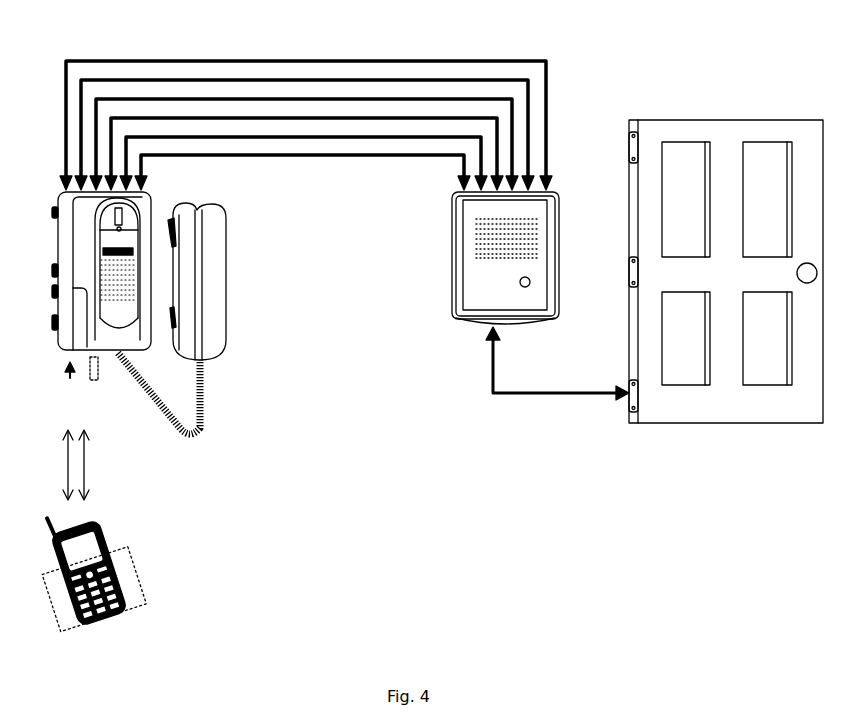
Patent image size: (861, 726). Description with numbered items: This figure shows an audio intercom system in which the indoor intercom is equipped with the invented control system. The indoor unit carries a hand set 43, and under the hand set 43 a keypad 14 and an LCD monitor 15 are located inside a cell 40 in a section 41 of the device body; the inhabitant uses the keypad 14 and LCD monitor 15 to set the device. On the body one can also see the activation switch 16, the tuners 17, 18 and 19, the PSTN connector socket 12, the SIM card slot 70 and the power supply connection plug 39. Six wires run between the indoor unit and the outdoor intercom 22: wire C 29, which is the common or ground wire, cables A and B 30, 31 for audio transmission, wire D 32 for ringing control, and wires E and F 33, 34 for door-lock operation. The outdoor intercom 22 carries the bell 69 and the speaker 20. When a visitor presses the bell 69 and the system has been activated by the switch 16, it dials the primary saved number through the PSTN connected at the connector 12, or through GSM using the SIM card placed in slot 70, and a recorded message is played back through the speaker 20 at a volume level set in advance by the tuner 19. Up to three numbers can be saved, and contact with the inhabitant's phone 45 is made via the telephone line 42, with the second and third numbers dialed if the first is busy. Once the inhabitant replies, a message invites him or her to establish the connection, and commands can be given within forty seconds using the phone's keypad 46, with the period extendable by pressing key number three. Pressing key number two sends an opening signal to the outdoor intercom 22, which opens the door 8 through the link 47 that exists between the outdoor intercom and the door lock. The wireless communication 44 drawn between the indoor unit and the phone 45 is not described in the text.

The door 8 is at (670, 120).
The PSTN connector socket 12 is at (93, 380).
The keypad 14 is at (125, 285).
The LCD monitor 15 is at (133, 250).
The activation switch 16 is at (52, 213).
The tuner 17 is at (52, 322).
The tuner 18 is at (52, 291).
The tuner 19 is at (52, 270).
The speaker 20 is at (538, 242).
The outdoor intercom 22 is at (462, 323).
The wire C 29 is at (443, 156).
The cable A 30 is at (417, 138).
The cable B 31 is at (370, 119).
The wire D 32 is at (137, 97).
The wire E 33 is at (113, 79).
The wire F 34 is at (82, 60).
The power supply connection plug 39 is at (68, 352).
The cell 40 is at (117, 269).
The section of device body 41 is at (155, 347).
The telephone line 42 is at (60, 193).
The hand set 43 is at (220, 338).
The wireless communication link 44 is at (98, 472).
The inhabitant's phone 45 is at (105, 542).
The keypad of inhabitant's phone 46 is at (145, 600).
The link 47 is at (520, 394).
The bell 69 is at (531, 280).
The SIM card slot 70 is at (73, 245).